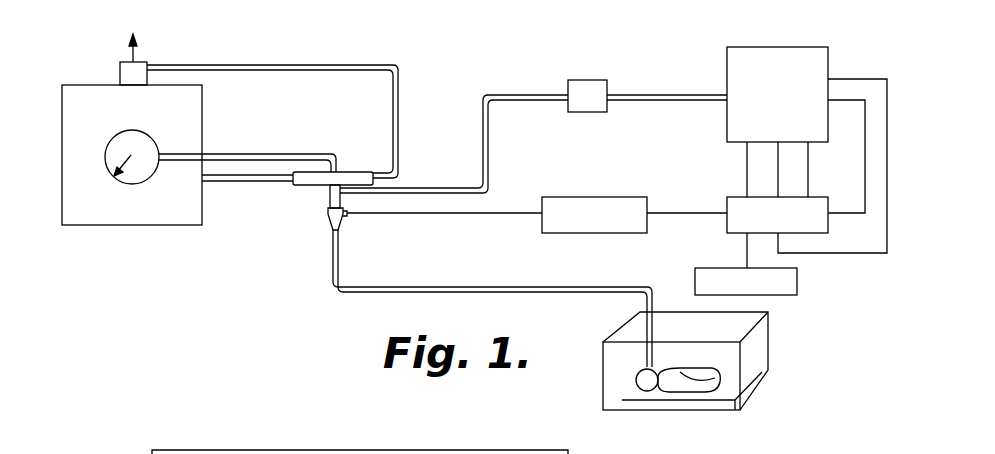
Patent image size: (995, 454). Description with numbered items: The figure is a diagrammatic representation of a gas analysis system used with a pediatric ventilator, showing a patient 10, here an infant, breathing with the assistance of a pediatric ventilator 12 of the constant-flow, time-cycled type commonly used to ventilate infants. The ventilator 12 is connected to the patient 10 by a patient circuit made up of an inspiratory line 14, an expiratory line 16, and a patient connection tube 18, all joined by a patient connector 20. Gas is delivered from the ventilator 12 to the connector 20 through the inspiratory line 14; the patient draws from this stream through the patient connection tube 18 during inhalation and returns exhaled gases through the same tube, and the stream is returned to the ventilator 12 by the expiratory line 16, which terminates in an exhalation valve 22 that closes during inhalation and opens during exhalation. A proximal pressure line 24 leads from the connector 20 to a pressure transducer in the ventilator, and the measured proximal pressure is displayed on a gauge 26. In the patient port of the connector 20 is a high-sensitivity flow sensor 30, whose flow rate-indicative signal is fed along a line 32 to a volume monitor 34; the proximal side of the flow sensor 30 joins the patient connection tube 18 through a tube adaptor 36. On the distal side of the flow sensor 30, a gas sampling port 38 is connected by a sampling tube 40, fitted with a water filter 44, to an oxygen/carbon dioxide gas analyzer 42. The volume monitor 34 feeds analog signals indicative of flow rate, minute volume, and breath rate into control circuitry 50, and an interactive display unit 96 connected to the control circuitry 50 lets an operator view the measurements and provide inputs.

The patient 10 is at (700, 392).
The pediatric ventilator 12 is at (130, 226).
The inspiratory line 14 is at (241, 184).
The expiratory line 16 is at (398, 128).
The patient connection tube 18 is at (364, 294).
The patient connector 20 is at (327, 190).
The exhalation valve 22 is at (120, 74).
The proximal pressure line 24 is at (270, 154).
The gauge 26 is at (156, 133).
The flow sensor 30 is at (345, 216).
The line 32 is at (450, 214).
The volume monitor 34 is at (588, 197).
The tube adaptor 36 is at (326, 222).
The gas sampling port 38 is at (343, 203).
The sampling tube 40 is at (441, 188).
The gas analyzer 42 is at (727, 76).
The water filter 44 is at (586, 80).
The control circuitry 50 is at (738, 197).
The interactive display unit 96 is at (797, 281).